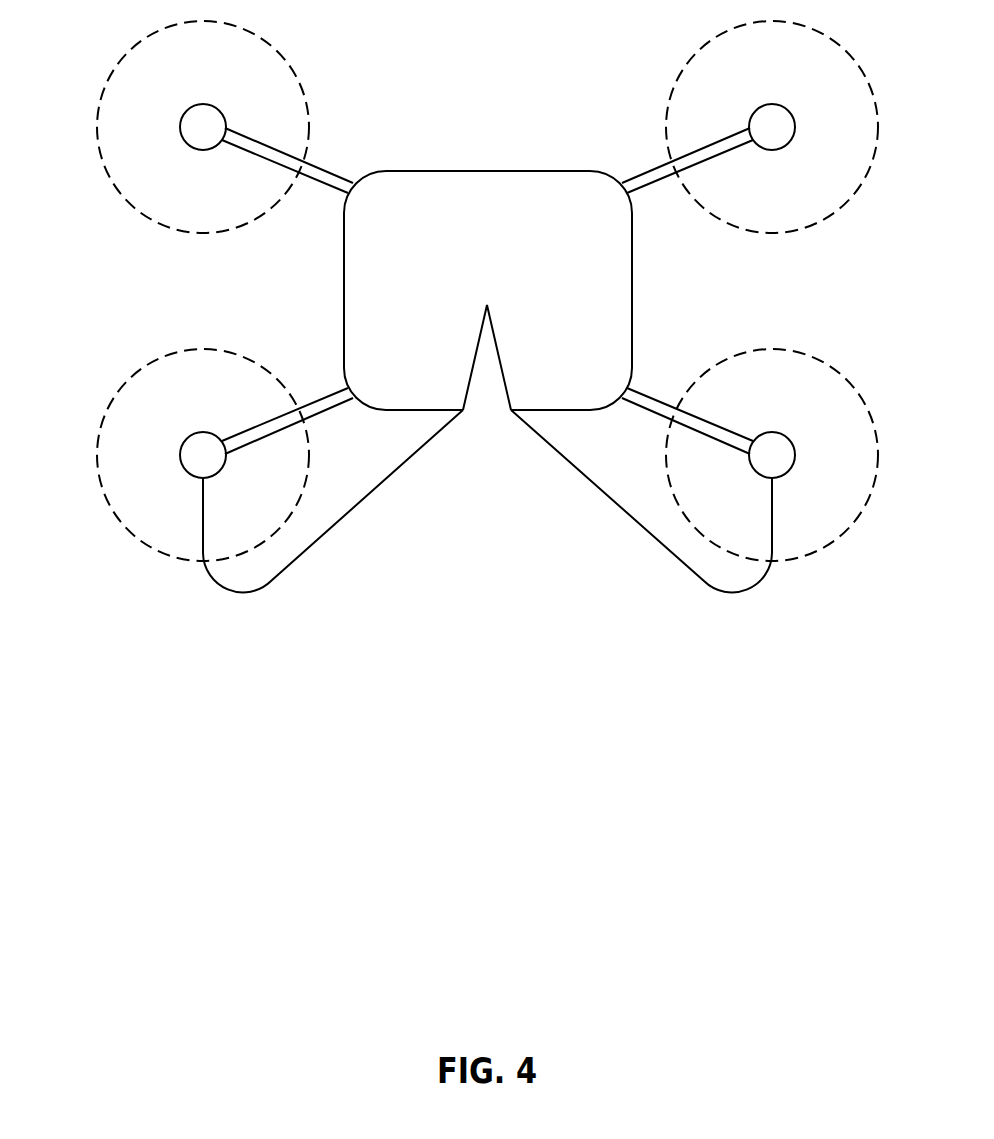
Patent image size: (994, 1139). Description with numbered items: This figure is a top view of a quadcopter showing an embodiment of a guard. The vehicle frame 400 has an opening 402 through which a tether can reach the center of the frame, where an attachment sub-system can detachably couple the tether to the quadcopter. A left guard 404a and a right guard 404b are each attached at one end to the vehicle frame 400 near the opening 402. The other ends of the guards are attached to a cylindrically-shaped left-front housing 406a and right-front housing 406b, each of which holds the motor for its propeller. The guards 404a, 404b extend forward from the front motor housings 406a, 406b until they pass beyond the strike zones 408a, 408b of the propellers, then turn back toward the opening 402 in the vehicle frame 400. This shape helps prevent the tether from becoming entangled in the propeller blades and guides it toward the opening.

The vehicle frame 400 is at (487, 170).
The opening 402 is at (487, 421).
The left guard 404a is at (262, 592).
The right guard 404b is at (713, 592).
The left-front housing 406a is at (203, 432).
The right-front housing 406b is at (772, 432).
The strike zone 408a is at (205, 352).
The strike zone 408b is at (773, 350).